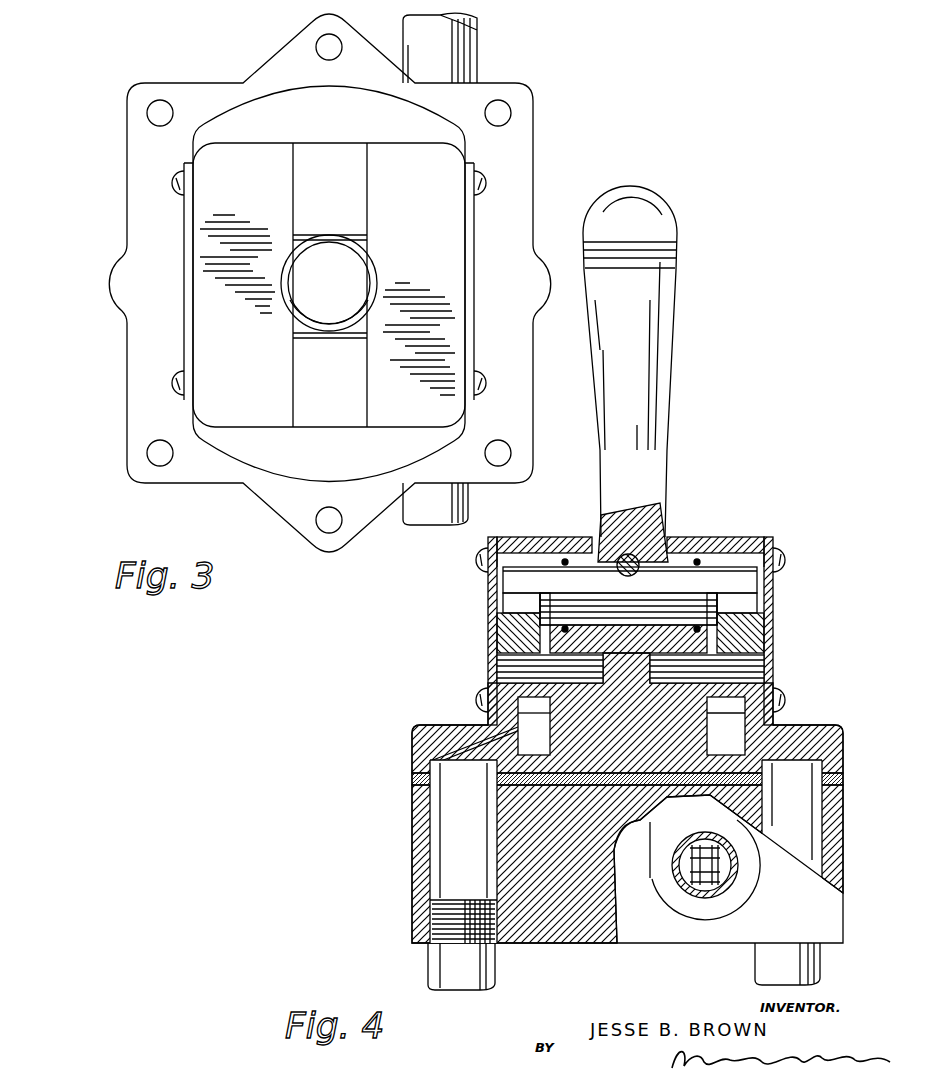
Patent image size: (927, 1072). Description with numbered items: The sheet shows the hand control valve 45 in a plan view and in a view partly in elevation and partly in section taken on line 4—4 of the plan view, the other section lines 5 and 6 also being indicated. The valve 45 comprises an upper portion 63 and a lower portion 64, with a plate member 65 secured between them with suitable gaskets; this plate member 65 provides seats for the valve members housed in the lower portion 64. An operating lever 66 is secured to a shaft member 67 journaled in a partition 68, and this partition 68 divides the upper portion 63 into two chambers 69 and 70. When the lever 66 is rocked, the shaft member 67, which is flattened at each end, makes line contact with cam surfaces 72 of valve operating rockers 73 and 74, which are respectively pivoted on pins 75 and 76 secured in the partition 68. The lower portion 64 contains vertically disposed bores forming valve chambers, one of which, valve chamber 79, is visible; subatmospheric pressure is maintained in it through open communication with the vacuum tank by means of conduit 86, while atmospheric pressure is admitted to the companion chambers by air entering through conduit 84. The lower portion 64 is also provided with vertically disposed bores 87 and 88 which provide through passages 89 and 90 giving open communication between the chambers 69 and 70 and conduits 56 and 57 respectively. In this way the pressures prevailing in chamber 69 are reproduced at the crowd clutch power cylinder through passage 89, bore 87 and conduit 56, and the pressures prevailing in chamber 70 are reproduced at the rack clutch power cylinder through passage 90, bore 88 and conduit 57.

In FIG. 3, the valve 45 is at (224, 70).
In FIG. 4, the valve 45 is at (398, 738).
In FIG. 3, the conduit 84 is at (480, 44).
In FIG. 3, the operating lever 66 is at (343, 277).
In FIG. 4, the operating lever 66 is at (655, 443).
In FIG. 3, the upper portion 63 is at (275, 448).
In FIG. 4, the upper portion 63 is at (435, 732).
In FIG. 3, the conduit 86 is at (415, 520).
In FIG. 4, the conduit 86 is at (693, 897).
In FIG. 3, the section line 4- 4 is at (143, 285).
In FIG. 4, the section line 5- 5 is at (353, 890).
In FIG. 4, the section line 6- 6 is at (777, 500).
In FIG. 4, the shaft member 67 is at (657, 587).
In FIG. 4, the chamber 70 is at (742, 562).
In FIG. 4, the chamber 69 is at (512, 557).
In FIG. 4, the cam surfaces 72 is at (510, 602).
In FIG. 4, the valve operating rocker 73 is at (507, 627).
In FIG. 4, the valve operating rocker 74 is at (747, 627).
In FIG. 4, the partition 68 is at (703, 645).
In FIG. 4, the pin 75 is at (520, 668).
In FIG. 4, the pin 76 is at (740, 667).
In FIG. 4, the passage 89 is at (493, 745).
In FIG. 4, the passage 90 is at (753, 743).
In FIG. 4, the plate member 65 is at (412, 779).
In FIG. 4, the lower portion 64 is at (417, 809).
In FIG. 4, the bore 87 is at (460, 837).
In FIG. 4, the bore 88 is at (797, 827).
In FIG. 4, the valve chamber 79 is at (737, 863).
In FIG. 4, the conduit 56 is at (443, 966).
In FIG. 4, the conduit 57 is at (820, 962).